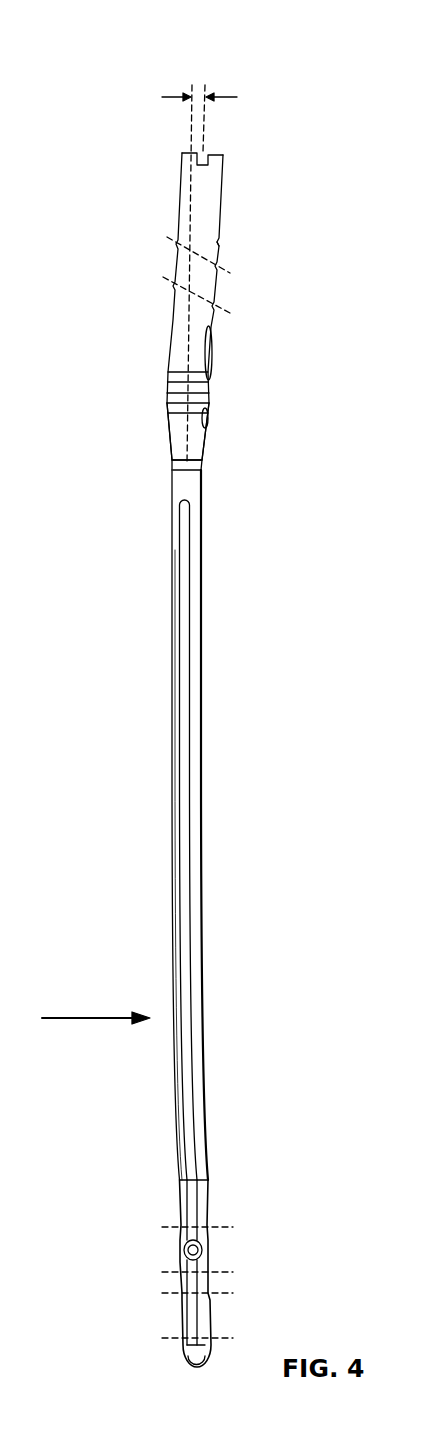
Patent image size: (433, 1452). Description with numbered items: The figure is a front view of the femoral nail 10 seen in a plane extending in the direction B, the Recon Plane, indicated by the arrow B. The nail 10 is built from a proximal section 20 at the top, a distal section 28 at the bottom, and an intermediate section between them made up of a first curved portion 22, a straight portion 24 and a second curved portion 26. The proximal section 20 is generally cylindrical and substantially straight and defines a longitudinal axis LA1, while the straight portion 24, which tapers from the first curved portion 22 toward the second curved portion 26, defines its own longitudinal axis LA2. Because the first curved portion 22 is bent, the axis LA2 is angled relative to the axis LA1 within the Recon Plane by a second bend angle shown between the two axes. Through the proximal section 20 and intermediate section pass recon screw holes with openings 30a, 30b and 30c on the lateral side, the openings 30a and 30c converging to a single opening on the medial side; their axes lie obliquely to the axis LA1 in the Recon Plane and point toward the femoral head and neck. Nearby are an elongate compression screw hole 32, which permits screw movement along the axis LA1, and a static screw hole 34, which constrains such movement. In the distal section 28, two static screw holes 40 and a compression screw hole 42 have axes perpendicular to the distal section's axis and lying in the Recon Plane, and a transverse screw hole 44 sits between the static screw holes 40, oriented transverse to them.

The femoral nail 10 is at (127, 51).
The proximal section 20 is at (180, 192).
The first curved portion 22 is at (168, 392).
The straight portion 24 is at (169, 442).
The second curved portion 26 is at (201, 836).
The distal section 28 is at (179, 1192).
The recon screw hole opening 30a is at (218, 242).
The recon screw hole opening 30b is at (177, 247).
The recon screw hole opening 30c is at (213, 306).
The compression screw hole 32 is at (212, 356).
The static screw hole 34 is at (208, 414).
The static screw holes 40 is at (206, 1224).
The compression screw hole 42 is at (182, 1295).
The transverse screw hole 44 is at (200, 1252).
The longitudinal axis LA1 is at (207, 122).
The longitudinal axis LA2 is at (186, 118).
The direction B is at (97, 1018).